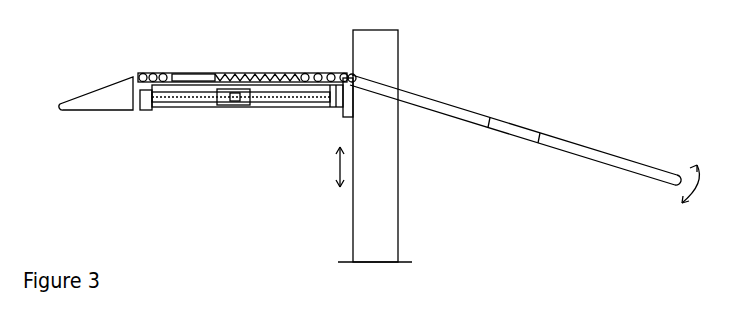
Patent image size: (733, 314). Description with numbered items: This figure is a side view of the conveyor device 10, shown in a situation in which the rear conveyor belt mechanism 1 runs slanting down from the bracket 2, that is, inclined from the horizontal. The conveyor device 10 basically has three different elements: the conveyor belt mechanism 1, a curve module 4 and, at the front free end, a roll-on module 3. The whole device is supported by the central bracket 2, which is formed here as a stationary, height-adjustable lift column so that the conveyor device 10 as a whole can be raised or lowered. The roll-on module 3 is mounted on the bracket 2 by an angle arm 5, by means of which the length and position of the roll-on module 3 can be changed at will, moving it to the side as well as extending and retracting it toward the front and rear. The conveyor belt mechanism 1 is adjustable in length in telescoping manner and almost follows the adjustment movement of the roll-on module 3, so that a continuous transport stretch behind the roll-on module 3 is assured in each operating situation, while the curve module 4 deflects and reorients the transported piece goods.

The conveyor belt mechanism 1 is at (238, 75).
The bracket 2 is at (388, 196).
The roll-on module 3 is at (97, 100).
The curve module 4 is at (157, 65).
The angle arm 5 is at (198, 102).
The conveyor device 10 is at (484, 56).